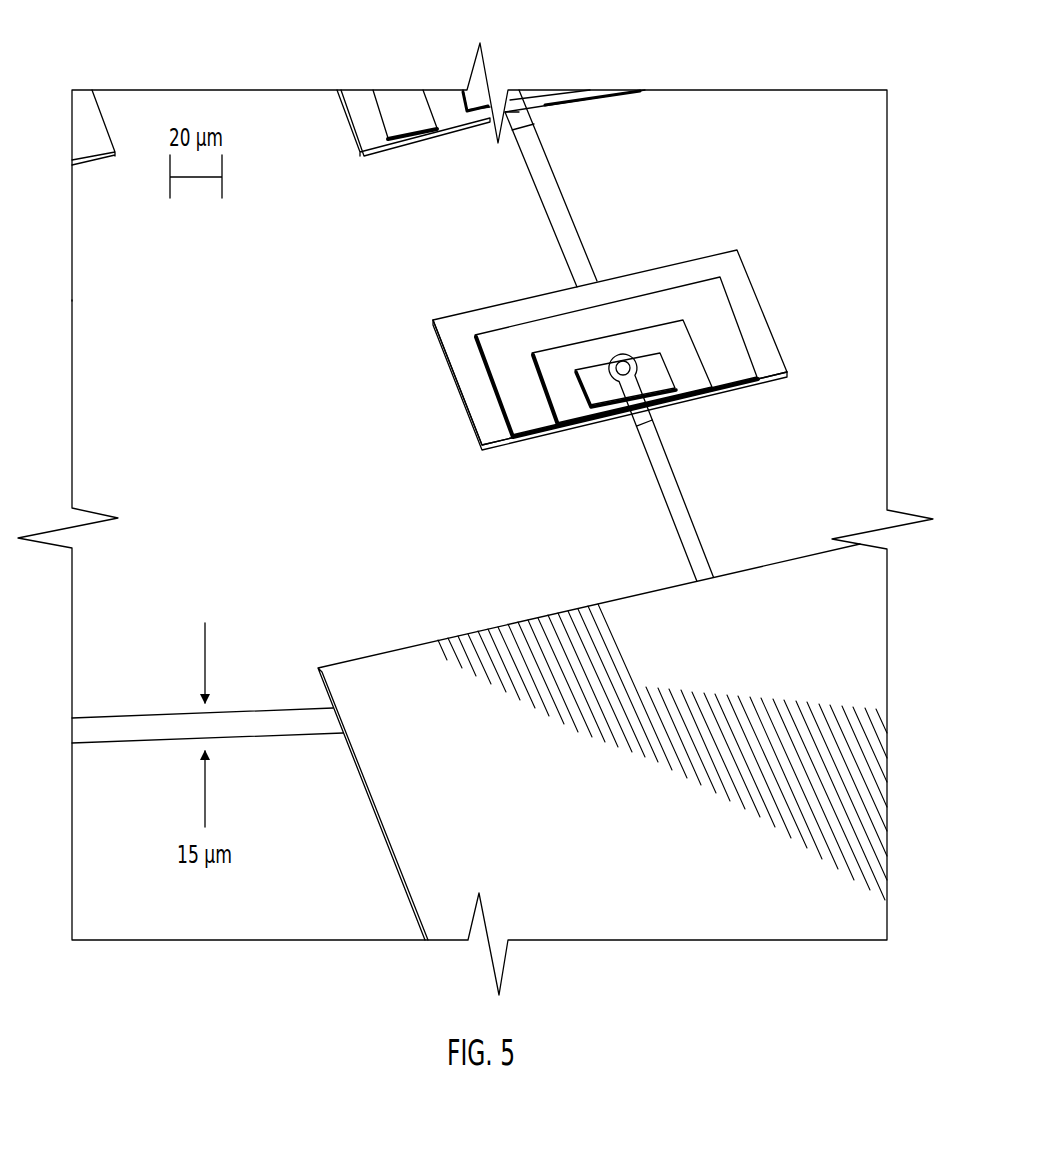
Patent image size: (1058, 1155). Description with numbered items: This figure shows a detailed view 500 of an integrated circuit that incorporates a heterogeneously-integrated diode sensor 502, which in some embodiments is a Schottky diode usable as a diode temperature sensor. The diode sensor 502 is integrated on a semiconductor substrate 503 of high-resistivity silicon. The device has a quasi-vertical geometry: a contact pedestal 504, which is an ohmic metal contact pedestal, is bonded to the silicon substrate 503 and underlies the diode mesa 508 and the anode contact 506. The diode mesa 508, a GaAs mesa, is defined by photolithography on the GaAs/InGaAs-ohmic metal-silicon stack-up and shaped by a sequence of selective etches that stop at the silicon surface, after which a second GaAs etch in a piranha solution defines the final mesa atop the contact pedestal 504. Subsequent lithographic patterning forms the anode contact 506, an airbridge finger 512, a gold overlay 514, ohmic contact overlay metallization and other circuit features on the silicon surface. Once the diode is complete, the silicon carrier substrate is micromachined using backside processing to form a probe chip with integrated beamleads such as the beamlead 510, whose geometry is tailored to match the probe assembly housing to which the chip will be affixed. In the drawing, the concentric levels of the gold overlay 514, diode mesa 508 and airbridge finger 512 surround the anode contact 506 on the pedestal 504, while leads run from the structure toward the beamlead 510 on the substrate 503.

The detailed view 500 is at (753, 40).
The diode sensor 502 is at (761, 307).
The semiconductor substrate 503 is at (305, 407).
The contact pedestal 504 is at (495, 432).
The anode contact 506 is at (624, 356).
The diode mesa 508 is at (660, 379).
The beamlead 510 is at (636, 597).
The airbridge finger 512 is at (627, 407).
The gold overlay 514 is at (737, 368).